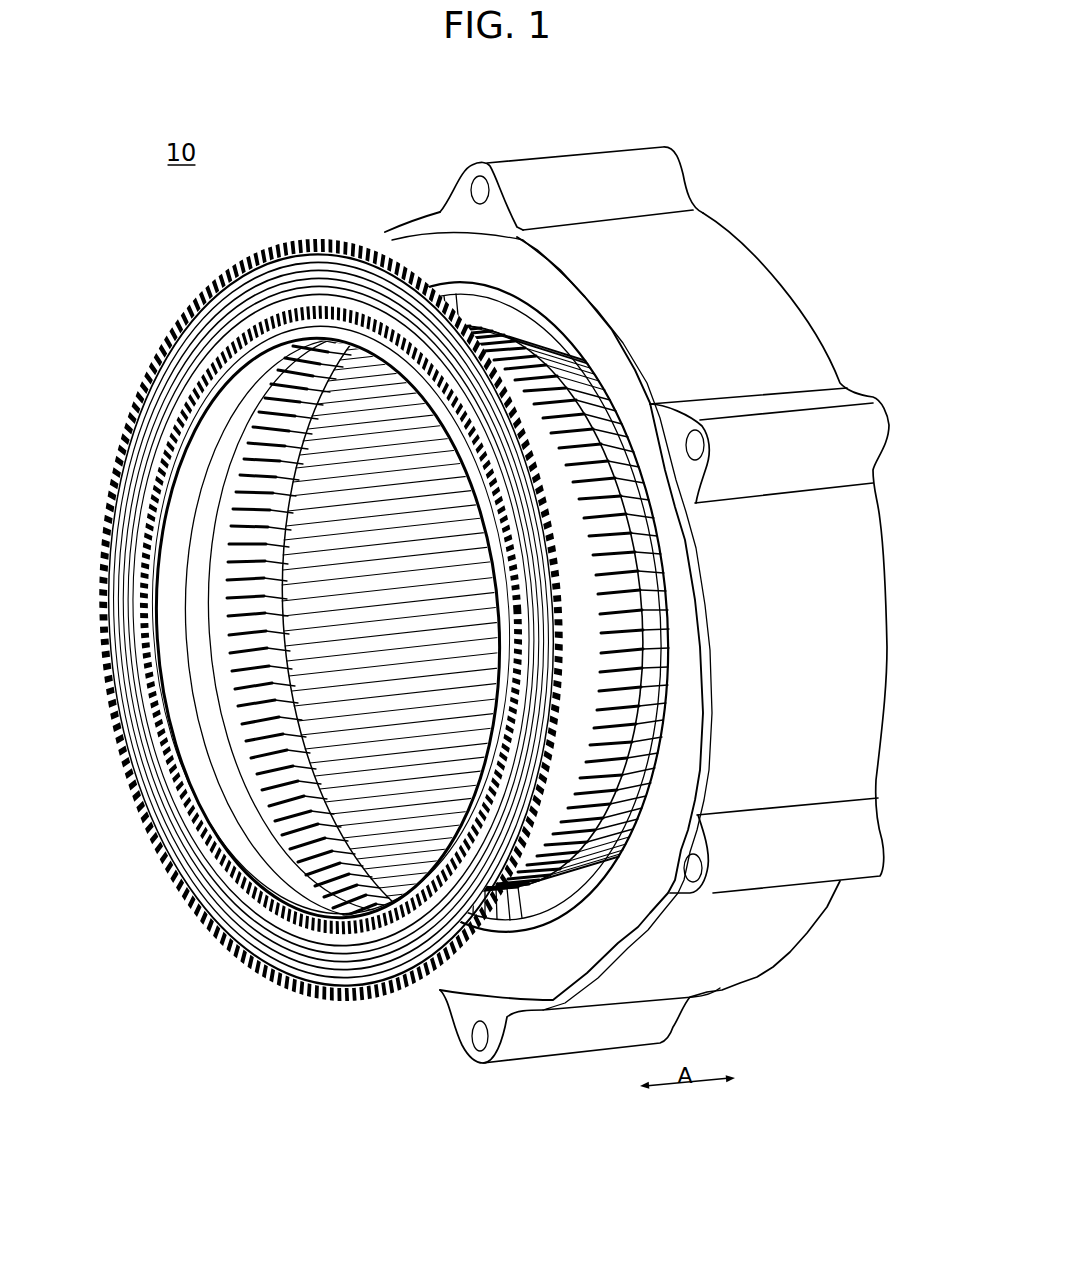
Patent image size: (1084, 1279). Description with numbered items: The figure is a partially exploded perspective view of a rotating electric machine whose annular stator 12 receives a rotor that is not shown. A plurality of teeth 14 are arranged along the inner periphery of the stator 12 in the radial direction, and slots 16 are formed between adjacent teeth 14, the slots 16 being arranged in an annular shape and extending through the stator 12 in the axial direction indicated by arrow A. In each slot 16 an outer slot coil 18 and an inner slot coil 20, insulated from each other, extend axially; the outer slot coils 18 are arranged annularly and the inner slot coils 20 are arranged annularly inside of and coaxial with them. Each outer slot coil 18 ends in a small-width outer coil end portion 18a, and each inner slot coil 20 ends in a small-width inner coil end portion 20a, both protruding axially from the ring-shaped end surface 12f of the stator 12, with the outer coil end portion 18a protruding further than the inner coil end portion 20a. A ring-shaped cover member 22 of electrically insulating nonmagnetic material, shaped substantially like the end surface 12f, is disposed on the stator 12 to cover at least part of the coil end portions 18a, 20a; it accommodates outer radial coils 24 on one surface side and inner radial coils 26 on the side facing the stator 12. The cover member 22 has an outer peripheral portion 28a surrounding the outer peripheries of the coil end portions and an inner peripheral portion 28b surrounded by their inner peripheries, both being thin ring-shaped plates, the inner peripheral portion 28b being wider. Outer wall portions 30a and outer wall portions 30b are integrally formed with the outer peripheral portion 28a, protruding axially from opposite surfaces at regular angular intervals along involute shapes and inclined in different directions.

The stator 12 is at (637, 628).
The end surface 12f is at (547, 970).
The teeth 14 is at (555, 650).
The slots 16 is at (407, 837).
The outer slot coil 18 is at (323, 618).
The outer coil end portion 18a is at (248, 472).
The inner slot coil 20 is at (518, 607).
The inner coil end portion 20a is at (600, 745).
The cover member 22 is at (329, 605).
The outer radial coils 24 is at (158, 726).
The inner radial coils 26 is at (210, 783).
The outer peripheral portion 28a is at (401, 276).
The inner peripheral portion 28b is at (245, 853).
The outer wall portions 30a is at (255, 970).
The outer wall portions 30b is at (193, 718).